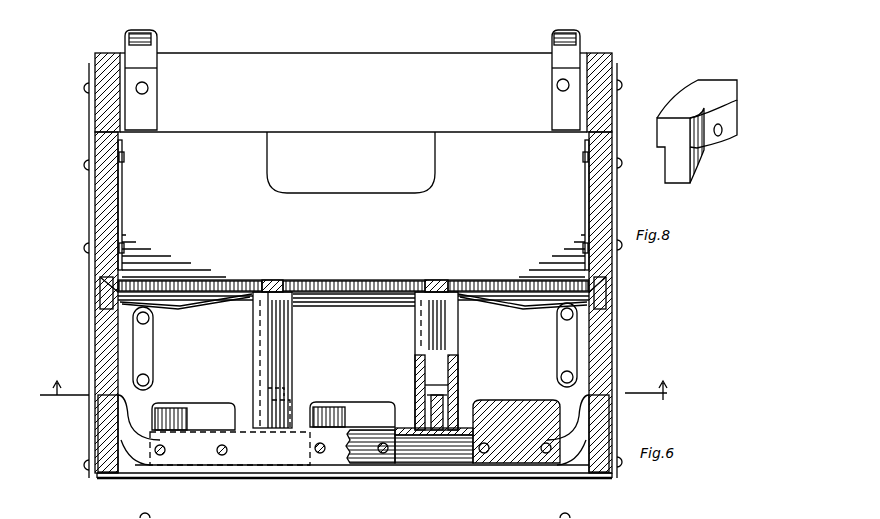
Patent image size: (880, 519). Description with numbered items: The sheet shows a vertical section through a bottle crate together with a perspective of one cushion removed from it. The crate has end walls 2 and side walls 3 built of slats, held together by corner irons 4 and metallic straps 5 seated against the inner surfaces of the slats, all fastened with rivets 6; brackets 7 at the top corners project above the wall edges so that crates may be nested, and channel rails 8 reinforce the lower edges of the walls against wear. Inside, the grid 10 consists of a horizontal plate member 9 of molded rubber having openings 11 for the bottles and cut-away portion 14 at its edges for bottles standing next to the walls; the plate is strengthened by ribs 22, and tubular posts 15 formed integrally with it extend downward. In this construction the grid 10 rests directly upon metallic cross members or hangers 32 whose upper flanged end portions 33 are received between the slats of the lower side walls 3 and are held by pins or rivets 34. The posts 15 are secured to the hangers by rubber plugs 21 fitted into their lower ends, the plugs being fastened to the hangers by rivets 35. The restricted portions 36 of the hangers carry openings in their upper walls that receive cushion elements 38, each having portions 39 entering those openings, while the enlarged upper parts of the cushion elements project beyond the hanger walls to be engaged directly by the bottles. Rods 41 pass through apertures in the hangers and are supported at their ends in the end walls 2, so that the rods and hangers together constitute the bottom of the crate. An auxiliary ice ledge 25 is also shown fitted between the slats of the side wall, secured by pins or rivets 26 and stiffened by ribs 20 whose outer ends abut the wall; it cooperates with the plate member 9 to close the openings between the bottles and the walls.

In FIG. 6, the end walls 2 is at (371, 62).
In FIG. 6, the side walls 3 is at (100, 211).
In FIG. 6, the corner irons 4 is at (95, 124).
In FIG. 6, the metallic straps 5 is at (122, 178).
In FIG. 6, the rivets 6 is at (85, 88).
In FIG. 6, the brackets 7 is at (150, 46).
In FIG. 6, the channel rails 8 is at (113, 478).
In FIG. 6, the horizontal plate member 9 is at (417, 278).
In FIG. 6, the grid 10 is at (362, 259).
In FIG. 6, the openings 11 is at (381, 278).
In FIG. 6, the cut-away portion 14 is at (230, 278).
In FIG. 6, the tubular posts 15 is at (291, 368).
In FIG. 6, the ribs 20 is at (103, 310).
In FIG. 6, the plugs 21 is at (290, 400).
In FIG. 6, the ribs 22 is at (392, 300).
In FIG. 6, the ice ledge 25 is at (146, 278).
In FIG. 6, the pins or rivets 26 is at (100, 297).
In FIG. 6, the cross members or hangers 32 is at (430, 458).
In FIG. 6, the upper flanged end portions 33 is at (112, 396).
In FIG. 6, the pins or rivets 34 is at (95, 422).
In FIG. 6, the rivets 35 is at (285, 392).
In FIG. 6, the restricted portions 36 is at (158, 458).
In FIG. 6, the cushion elements 38 is at (190, 408).
In FIG. 8, the cushion elements 38 is at (722, 82).
In FIG. 6, the portions 39 is at (236, 475).
In FIG. 8, the portions 39 is at (704, 150).
In FIG. 6, the rods 41 is at (162, 462).